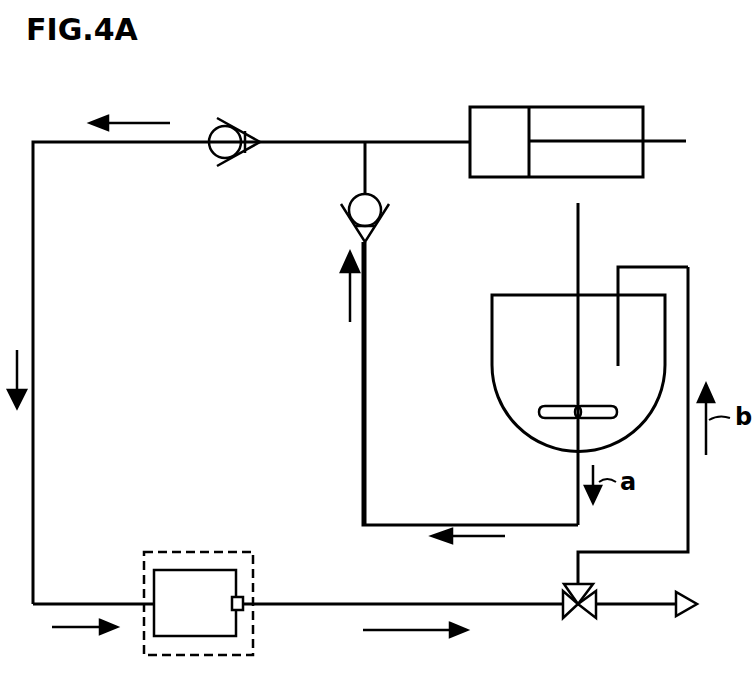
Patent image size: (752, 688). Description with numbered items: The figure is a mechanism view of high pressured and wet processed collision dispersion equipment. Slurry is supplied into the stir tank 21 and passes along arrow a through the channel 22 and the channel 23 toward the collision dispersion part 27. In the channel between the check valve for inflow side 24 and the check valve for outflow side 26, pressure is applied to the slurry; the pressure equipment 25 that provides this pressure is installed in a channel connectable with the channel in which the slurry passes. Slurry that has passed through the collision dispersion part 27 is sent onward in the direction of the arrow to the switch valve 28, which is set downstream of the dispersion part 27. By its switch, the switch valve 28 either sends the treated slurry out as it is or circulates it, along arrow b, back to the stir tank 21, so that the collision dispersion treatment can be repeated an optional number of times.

The stir tank 21 is at (491, 340).
The channel 22 is at (575, 477).
The channel 23 is at (362, 438).
The check valve for inflow side 24 is at (400, 212).
The pressure equipment 25 is at (545, 107).
The check valve for outflow side 26 is at (250, 118).
The collision dispersion part 27 is at (189, 553).
The switch valve 28 is at (582, 622).